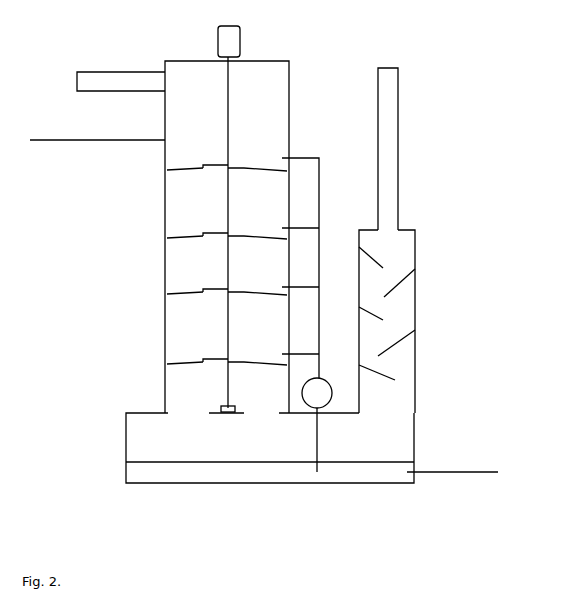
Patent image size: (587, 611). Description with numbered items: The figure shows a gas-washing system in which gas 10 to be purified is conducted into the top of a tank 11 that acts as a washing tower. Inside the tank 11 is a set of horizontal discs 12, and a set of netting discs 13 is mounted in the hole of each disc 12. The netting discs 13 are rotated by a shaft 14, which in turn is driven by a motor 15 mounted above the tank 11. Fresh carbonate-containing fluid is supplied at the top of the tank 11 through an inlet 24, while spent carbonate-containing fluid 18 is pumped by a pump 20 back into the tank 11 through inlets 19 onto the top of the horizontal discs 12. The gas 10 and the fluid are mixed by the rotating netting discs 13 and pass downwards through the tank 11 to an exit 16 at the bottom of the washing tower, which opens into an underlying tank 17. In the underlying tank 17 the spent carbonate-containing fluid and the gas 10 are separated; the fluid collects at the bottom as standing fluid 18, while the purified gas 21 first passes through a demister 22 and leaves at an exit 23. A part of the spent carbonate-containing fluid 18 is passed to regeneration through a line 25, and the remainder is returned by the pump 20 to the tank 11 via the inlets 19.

The gas 10 is at (110, 81).
The tank 11 is at (217, 237).
The horizontal discs 12 is at (227, 259).
The netting discs 13 is at (223, 256).
The shaft 14 is at (220, 232).
The motor 15 is at (239, 41).
The exit 16 is at (212, 418).
The underlying tank 17 is at (259, 448).
The spent carbonate-containing fluid 18 is at (270, 471).
The inlets 19 is at (300, 260).
The pump 20 is at (317, 425).
The purified gas 21 is at (334, 417).
The demister 22 is at (387, 321).
The exit 23 is at (398, 149).
The inlet 24 is at (97, 131).
The regeneration outlet 25 is at (452, 465).